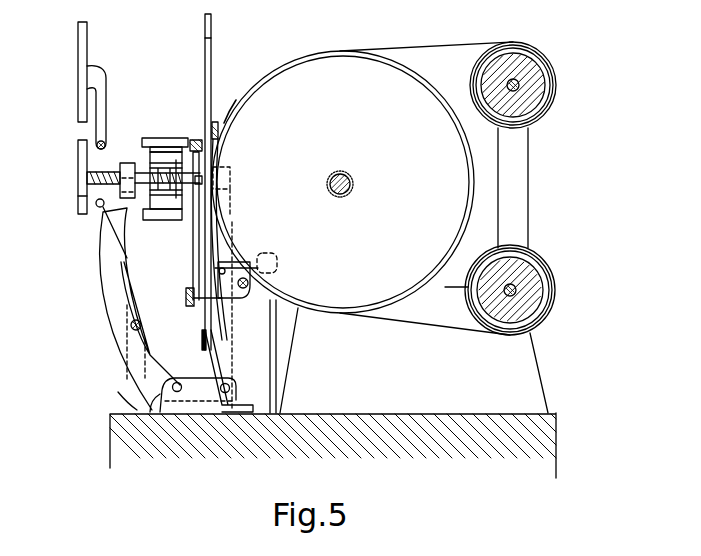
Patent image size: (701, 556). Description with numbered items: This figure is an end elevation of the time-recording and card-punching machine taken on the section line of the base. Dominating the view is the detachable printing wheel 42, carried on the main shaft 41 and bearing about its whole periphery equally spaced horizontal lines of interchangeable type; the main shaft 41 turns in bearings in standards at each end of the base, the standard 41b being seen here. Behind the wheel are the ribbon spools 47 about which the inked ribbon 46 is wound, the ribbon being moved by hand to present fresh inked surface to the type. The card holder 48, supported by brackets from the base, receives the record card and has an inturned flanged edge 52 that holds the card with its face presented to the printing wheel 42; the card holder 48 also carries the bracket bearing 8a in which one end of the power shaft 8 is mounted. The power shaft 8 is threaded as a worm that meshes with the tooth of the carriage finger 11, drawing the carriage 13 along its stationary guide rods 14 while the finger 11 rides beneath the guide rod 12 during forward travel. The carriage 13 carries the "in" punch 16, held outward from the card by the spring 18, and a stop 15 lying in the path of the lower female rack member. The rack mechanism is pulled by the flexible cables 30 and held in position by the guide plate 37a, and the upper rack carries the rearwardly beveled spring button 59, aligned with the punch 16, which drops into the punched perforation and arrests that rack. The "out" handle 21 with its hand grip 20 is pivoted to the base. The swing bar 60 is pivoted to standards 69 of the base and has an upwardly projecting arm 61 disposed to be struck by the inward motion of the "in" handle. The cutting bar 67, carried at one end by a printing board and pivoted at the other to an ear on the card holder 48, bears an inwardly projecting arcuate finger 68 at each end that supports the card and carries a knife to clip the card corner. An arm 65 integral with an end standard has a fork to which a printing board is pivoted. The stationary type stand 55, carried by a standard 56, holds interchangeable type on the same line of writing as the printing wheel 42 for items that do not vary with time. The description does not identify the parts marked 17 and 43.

The hand grip 20 is at (78, 44).
The punching "out" handle 21 is at (107, 120).
The lower bar 17 is at (77, 161).
The "in" punch 16 is at (112, 168).
The spring 18 is at (78, 198).
The arm of swing bar 61 is at (98, 210).
The stop 15 is at (130, 213).
The guide plate 37a is at (165, 138).
The flexible cable 30 is at (178, 139).
The stationary type stand 55 is at (216, 122).
The standard 56 is at (224, 123).
The arm 65 is at (204, 147).
The spring button 59 is at (222, 180).
The carriage 13 is at (230, 214).
The carriage finger 11 is at (240, 268).
The guide rod 12 is at (260, 265).
The cutting bar 67 is at (186, 299).
The arcuate finger 68 is at (196, 304).
The power shaft 8 is at (243, 290).
The bracket bearing 8a is at (233, 316).
The swing bar 60 is at (142, 328).
The guide rods 14 is at (207, 362).
The standards 69 is at (118, 392).
The inturned flanged edge 52 is at (212, 27).
The card holder 48 is at (212, 75).
The wheel 43 is at (278, 69).
The printing wheel 42 is at (333, 72).
The inked ribbon 46 is at (438, 32).
The ribbon spools 47 is at (540, 90).
The main shaft 41 is at (356, 186).
The standard 41b is at (409, 270).